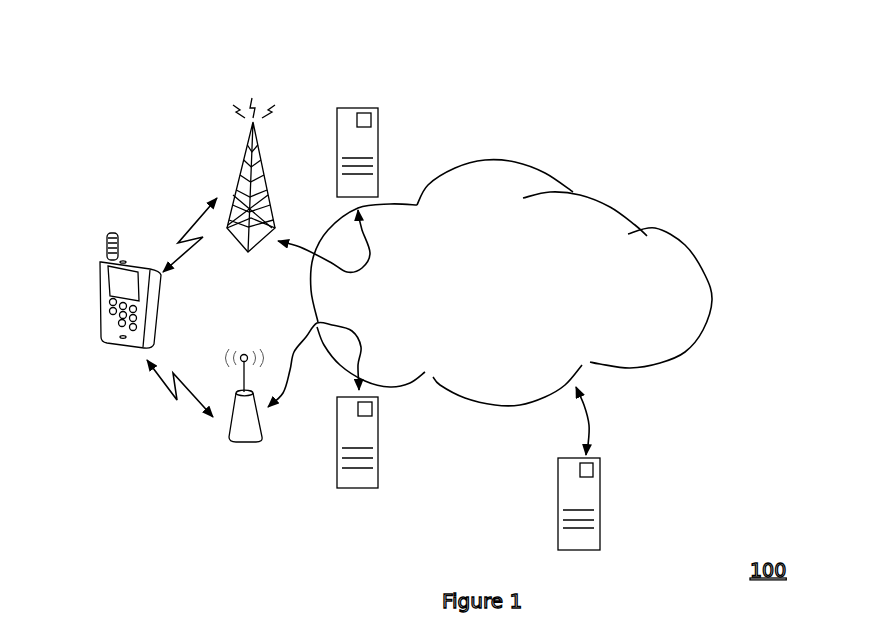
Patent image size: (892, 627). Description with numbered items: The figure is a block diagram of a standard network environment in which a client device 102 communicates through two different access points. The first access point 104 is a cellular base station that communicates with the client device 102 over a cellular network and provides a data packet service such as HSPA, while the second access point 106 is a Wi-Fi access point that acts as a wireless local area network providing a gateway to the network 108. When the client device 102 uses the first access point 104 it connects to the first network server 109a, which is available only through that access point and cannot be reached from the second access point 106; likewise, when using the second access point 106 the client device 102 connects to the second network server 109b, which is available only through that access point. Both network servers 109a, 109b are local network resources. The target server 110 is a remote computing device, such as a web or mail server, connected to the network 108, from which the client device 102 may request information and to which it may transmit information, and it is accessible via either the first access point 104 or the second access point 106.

The client device 102 is at (99, 258).
The first access point 104 is at (243, 162).
The second access point 106 is at (246, 446).
The network 108 is at (519, 173).
The first network server 109a is at (391, 152).
The second network server 109b is at (391, 442).
The target server 110 is at (596, 528).